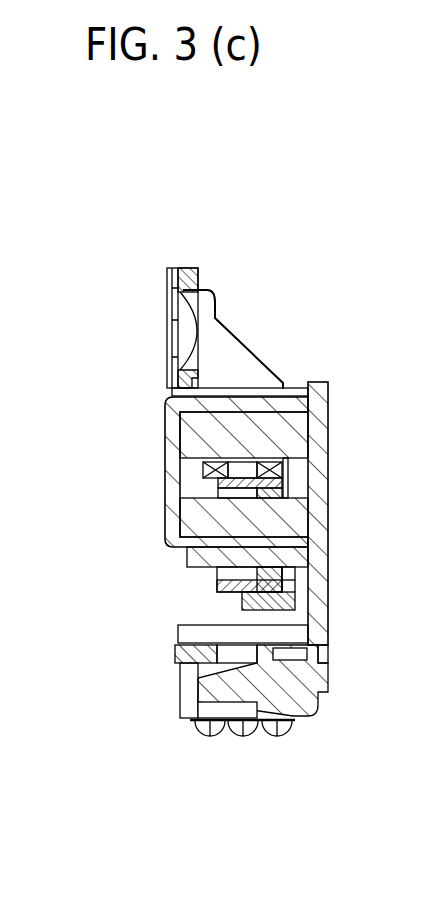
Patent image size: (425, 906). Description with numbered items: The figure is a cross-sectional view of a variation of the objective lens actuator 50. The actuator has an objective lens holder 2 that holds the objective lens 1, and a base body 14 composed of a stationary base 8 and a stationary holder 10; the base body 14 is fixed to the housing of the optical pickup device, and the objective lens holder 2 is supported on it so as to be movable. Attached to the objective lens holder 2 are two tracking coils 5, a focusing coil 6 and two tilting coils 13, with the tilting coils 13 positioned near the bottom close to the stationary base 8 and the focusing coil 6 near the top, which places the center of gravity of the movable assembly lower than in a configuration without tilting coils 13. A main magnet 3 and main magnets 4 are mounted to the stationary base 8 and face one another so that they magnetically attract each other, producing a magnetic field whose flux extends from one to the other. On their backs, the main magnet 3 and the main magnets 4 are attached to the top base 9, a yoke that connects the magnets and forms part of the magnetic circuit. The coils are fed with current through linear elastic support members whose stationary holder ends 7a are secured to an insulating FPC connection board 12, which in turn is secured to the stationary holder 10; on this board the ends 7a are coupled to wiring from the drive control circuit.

The objective lens actuator 50 is at (283, 248).
The objective lens holder 2 is at (188, 268).
The objective lens 1 is at (212, 318).
The top base 9 is at (167, 425).
The main magnet 3 is at (305, 435).
The main magnets 4 is at (305, 516).
The tracking coils 5 is at (203, 472).
The focusing coil 6 is at (217, 586).
The tilting coils 13 is at (288, 577).
The stationary base 8 is at (330, 650).
The stationary holder 10 is at (330, 680).
The base body 14 is at (372, 640).
The FPC connection board 12 is at (192, 720).
The stationary holder ends 7a is at (210, 737).